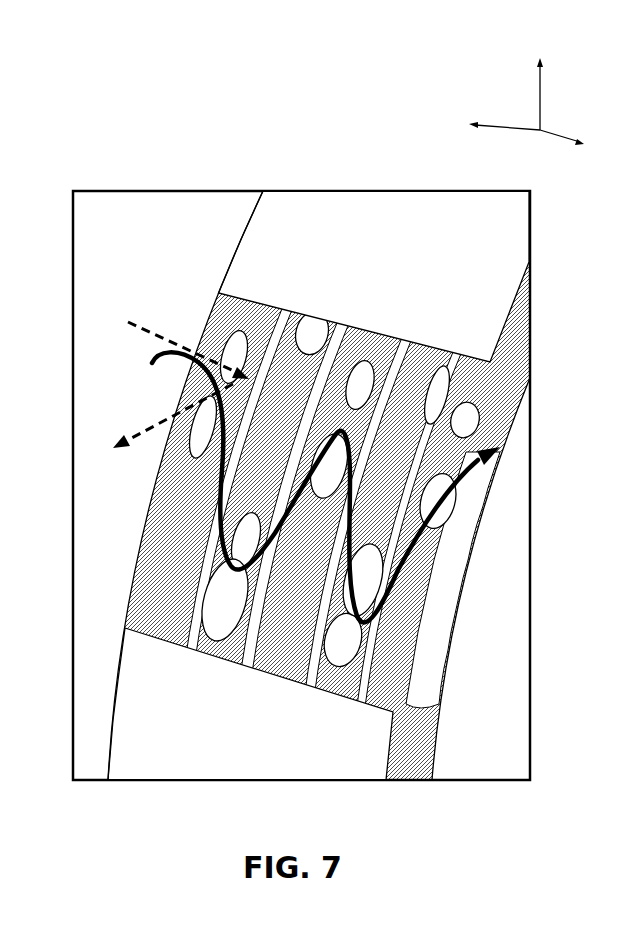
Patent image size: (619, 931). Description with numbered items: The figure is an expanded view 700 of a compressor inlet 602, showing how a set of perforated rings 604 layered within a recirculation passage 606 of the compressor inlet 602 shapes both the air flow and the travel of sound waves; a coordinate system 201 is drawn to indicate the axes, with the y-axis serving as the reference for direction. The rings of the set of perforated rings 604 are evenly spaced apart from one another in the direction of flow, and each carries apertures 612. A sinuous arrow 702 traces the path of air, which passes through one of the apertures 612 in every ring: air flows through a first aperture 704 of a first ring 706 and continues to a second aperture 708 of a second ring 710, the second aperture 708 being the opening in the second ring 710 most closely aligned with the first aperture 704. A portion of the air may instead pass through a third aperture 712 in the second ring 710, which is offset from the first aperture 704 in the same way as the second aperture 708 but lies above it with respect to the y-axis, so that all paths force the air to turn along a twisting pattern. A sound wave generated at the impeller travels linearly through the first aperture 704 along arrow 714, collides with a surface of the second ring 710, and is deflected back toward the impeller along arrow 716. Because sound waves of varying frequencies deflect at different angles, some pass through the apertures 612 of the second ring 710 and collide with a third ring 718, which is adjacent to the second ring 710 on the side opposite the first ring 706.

The coordinate system 201 is at (488, 68).
The expanded view 700 is at (236, 183).
The compressor inlet 602 is at (187, 230).
The set of perforated rings 604 is at (343, 292).
The recirculation passage 606 is at (200, 284).
The apertures 612 is at (466, 433).
The arrow 702 is at (152, 363).
The first aperture 704 is at (230, 345).
The first ring 706 is at (143, 545).
The second aperture 708 is at (246, 597).
The second ring 710 is at (236, 650).
The third aperture 712 is at (320, 332).
The arrow 714 is at (173, 339).
The arrow 716 is at (147, 428).
The third ring 718 is at (292, 662).